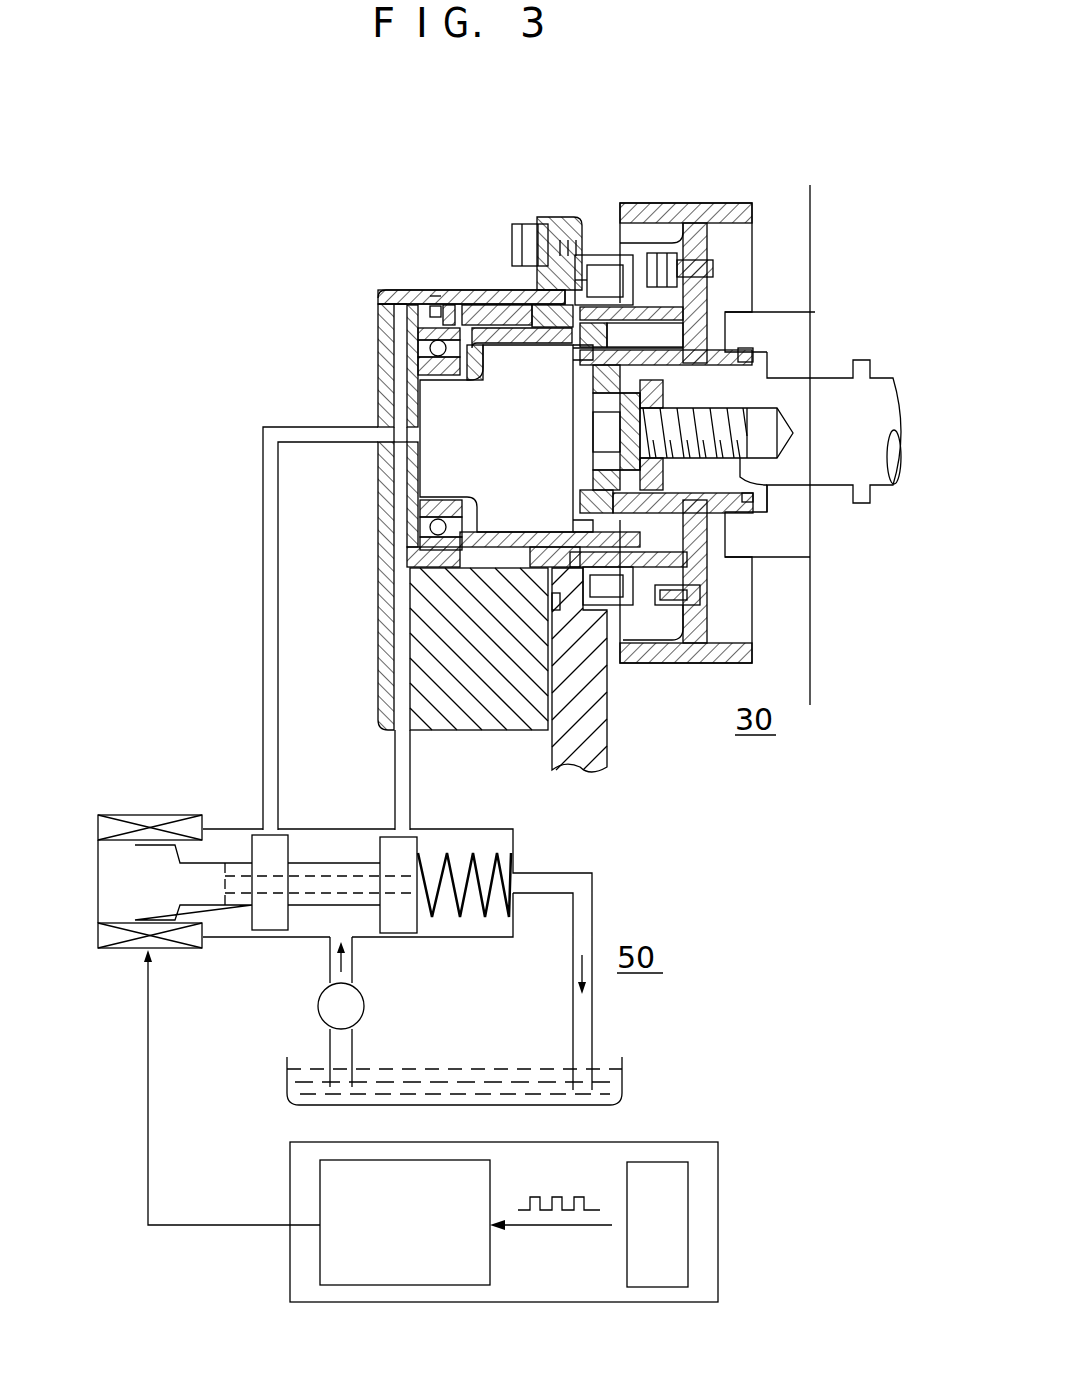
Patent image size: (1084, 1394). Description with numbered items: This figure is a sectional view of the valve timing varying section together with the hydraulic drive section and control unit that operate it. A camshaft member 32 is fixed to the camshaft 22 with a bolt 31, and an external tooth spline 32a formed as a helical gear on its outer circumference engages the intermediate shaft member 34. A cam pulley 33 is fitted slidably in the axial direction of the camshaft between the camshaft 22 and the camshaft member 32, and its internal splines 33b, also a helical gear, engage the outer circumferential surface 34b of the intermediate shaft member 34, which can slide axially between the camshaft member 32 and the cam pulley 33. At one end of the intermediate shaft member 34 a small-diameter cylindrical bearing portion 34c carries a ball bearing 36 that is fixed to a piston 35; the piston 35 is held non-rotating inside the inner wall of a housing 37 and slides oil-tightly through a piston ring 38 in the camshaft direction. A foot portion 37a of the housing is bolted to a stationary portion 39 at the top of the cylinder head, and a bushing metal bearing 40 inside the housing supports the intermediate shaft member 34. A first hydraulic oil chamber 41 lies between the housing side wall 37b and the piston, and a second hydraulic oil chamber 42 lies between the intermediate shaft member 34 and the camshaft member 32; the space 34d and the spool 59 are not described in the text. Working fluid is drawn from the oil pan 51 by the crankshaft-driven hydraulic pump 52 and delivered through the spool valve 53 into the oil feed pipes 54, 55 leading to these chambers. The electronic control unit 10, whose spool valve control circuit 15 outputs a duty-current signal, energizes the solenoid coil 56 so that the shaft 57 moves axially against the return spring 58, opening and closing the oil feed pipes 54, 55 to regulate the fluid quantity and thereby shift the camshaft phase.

The electronic control unit 10 is at (720, 1180).
The spool valve control circuit 15 is at (320, 1172).
The camshaft 22 is at (833, 392).
The bolt 31 is at (808, 487).
The camshaft member 32 is at (600, 475).
The external tooth spline 32a is at (683, 333).
The cam pulley 33 is at (753, 213).
The internal splines 33b is at (682, 305).
The intermediate shaft member 34 is at (507, 340).
The outer circumferential surface 34b is at (598, 255).
The bearing portion 34c is at (417, 363).
The pressure chamber 34d is at (577, 340).
The piston 35 is at (410, 553).
The ball bearing 36 is at (407, 322).
The housing 37 is at (487, 360).
The foot portion 37a is at (550, 222).
The housing side wall 37b is at (378, 347).
The piston ring 38 is at (433, 300).
The stationary portion 39 is at (578, 225).
The bushing metal bearing 40 is at (538, 538).
The first hydraulic oil chamber 41 is at (393, 413).
The second hydraulic oil chamber 42 is at (436, 307).
The oil pan 51 is at (462, 1057).
The hydraulic pump 52 is at (317, 1012).
The spool valve 53 is at (133, 800).
The oil feed pipe 54 is at (410, 768).
The oil feed pipe 55 is at (278, 742).
The solenoid coil 56 is at (170, 814).
The shaft 57 is at (213, 897).
The return spring 58 is at (503, 847).
The spool 59 is at (343, 880).